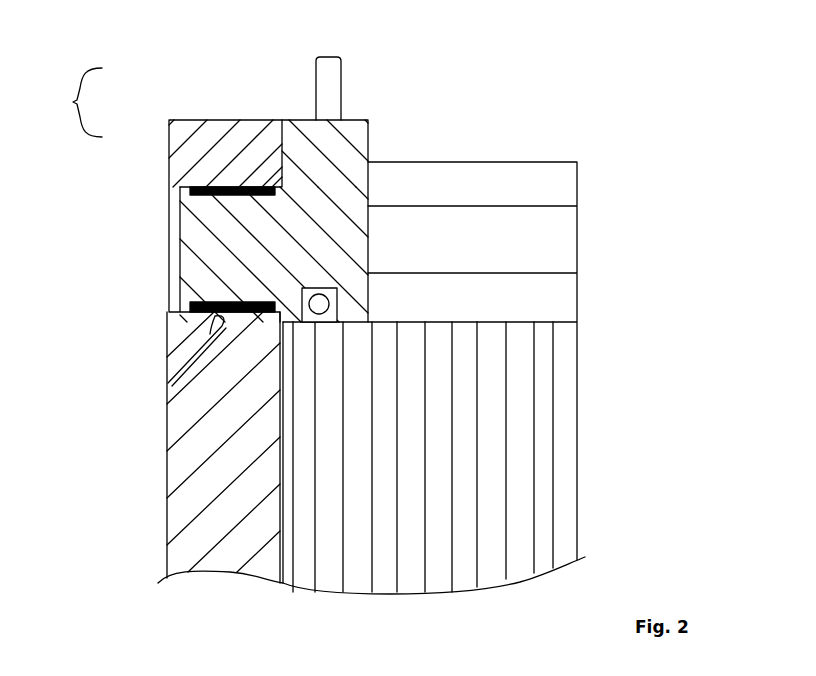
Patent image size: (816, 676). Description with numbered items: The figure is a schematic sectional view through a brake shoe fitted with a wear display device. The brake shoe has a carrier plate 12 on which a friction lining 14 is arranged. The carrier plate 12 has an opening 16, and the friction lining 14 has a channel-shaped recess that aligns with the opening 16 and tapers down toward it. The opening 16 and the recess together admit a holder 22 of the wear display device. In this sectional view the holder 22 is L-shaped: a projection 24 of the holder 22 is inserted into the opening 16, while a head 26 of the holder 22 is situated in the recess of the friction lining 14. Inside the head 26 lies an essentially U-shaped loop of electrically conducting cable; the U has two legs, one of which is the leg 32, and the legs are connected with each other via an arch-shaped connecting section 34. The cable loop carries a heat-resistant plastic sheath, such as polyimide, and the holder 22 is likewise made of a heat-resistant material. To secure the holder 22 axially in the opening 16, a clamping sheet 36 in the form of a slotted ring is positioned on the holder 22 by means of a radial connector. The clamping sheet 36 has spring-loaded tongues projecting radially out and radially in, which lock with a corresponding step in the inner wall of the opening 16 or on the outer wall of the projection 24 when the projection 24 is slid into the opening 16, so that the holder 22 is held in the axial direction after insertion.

The carrier plate 12 is at (167, 453).
The friction lining 14 is at (577, 398).
The opening 16 is at (168, 277).
The holder 22 is at (72, 102).
The projection 24 is at (168, 208).
The head 26 is at (305, 120).
The leg 32 is at (315, 73).
The arch-shaped connecting section 34 is at (332, 298).
The clamping sheet 36 is at (167, 387).